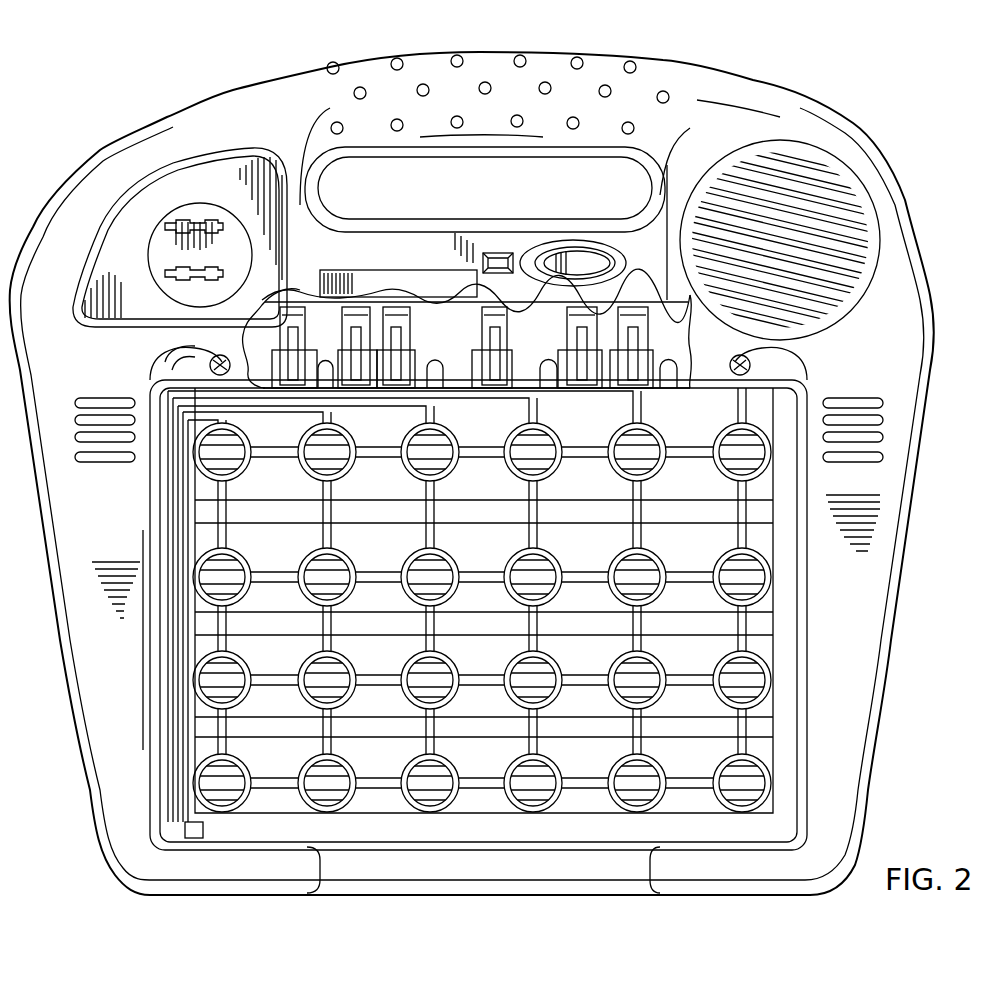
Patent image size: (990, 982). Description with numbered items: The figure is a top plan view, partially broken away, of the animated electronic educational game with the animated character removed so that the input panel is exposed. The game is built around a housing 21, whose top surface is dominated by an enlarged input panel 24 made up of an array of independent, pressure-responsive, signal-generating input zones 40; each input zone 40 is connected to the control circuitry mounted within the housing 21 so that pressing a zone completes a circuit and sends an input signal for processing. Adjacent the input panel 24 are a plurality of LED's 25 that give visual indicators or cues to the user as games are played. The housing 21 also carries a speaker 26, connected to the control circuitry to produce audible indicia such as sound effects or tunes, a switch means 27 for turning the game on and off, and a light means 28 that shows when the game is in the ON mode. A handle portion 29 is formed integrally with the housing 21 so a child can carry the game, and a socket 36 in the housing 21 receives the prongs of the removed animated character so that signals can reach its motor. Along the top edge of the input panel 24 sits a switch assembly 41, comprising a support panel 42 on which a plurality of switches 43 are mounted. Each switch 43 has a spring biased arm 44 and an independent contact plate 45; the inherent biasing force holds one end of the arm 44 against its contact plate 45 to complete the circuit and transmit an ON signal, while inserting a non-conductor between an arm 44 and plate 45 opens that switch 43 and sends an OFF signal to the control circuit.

The housing 21 is at (855, 122).
The input panel 24 is at (160, 688).
The LED's 25 is at (205, 358).
The speaker 26 is at (800, 268).
The switch means 27 is at (615, 260).
The light means 28 is at (480, 262).
The handle portion 29 is at (528, 103).
The socket 36 is at (166, 273).
The input zones 40 is at (237, 577).
The switch assembly 41 is at (697, 345).
The support panel 42 is at (290, 290).
The switches 43 is at (303, 313).
The spring biased arm 44 is at (275, 344).
The contact plate 45 is at (273, 382).